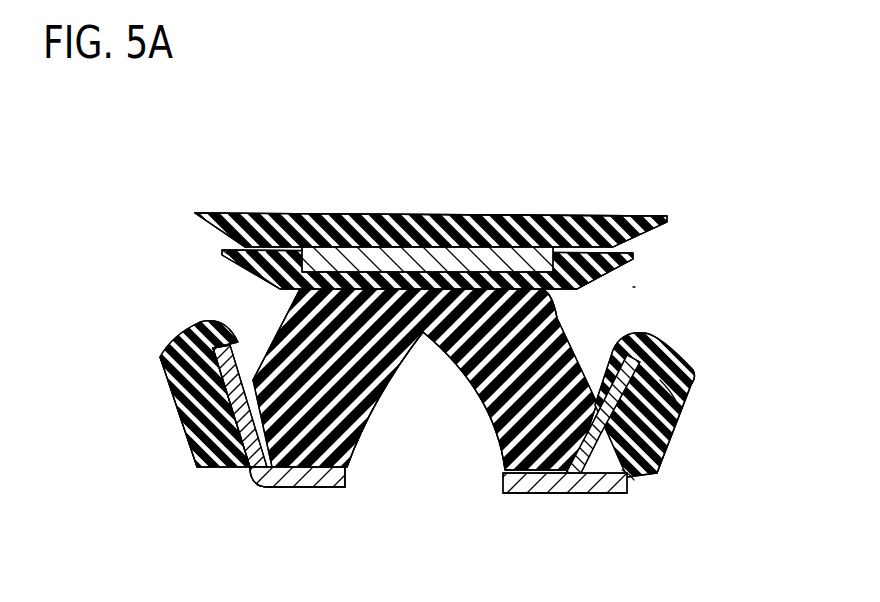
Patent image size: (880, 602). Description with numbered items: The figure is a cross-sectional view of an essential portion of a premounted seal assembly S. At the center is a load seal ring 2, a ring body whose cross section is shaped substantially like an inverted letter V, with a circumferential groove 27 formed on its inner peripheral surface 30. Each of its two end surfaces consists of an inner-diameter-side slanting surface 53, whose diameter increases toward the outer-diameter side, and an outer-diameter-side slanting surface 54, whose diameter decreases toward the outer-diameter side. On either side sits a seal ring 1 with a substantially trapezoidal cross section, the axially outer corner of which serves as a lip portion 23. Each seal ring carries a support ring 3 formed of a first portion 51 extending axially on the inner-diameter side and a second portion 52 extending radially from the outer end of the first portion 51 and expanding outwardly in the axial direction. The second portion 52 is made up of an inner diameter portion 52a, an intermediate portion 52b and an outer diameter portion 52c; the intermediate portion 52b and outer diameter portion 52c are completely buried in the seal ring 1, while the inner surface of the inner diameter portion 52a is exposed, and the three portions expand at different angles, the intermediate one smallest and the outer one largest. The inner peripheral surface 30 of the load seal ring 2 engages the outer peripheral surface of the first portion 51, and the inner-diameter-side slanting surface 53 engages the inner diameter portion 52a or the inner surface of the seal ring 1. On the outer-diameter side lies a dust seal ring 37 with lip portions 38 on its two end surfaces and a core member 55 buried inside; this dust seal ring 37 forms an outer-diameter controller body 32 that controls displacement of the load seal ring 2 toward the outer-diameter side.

The seal ring 1 is at (191, 323).
The load seal ring 2 is at (583, 347).
The support ring 3 is at (349, 481).
The lip portion 23 is at (160, 358).
The circumferential groove 27 is at (481, 420).
The inner peripheral surface 30 is at (326, 480).
The outer-diameter controller body 32 is at (460, 213).
The dust seal ring 37 is at (405, 212).
The lip portion 38 is at (222, 214).
The first portion 51 is at (295, 489).
The second portion 52 is at (196, 428).
The inner diameter portion 52a is at (226, 470).
The intermediate portion 52b is at (199, 455).
The outer diameter portion 52c is at (206, 386).
The inner-diameter-side slanting surface 53 is at (660, 462).
The outer-diameter-side slanting surface 54 is at (276, 341).
The core member 55 is at (520, 247).
The seal assembly S is at (634, 287).